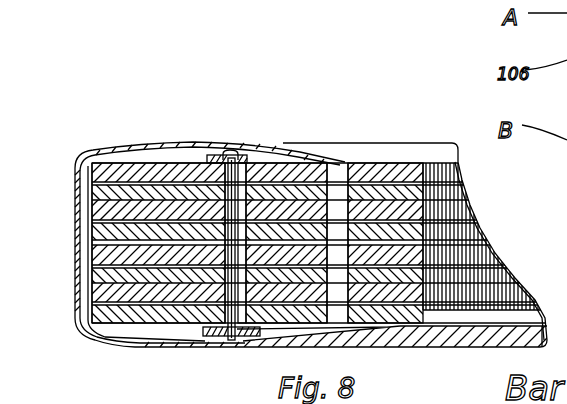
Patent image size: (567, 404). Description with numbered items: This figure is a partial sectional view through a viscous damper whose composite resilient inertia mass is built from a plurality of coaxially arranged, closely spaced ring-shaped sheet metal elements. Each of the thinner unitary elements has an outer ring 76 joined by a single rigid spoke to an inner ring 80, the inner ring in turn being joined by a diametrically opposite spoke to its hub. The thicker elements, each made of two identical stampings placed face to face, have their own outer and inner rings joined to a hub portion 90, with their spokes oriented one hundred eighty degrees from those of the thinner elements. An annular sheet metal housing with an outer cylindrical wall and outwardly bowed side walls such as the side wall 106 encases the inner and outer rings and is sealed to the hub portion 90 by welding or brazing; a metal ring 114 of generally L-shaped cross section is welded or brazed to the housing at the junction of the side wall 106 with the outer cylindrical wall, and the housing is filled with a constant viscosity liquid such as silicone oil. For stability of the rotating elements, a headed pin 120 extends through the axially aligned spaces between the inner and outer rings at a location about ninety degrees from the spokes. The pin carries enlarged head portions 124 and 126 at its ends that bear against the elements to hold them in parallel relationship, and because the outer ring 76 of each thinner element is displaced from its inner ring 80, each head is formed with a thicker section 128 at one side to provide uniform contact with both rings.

The outer ring 76 is at (130, 172).
The housing side wall 106 is at (170, 150).
The head portion 124 is at (207, 157).
The thicker section 128 is at (232, 152).
The headed pin 120 is at (245, 163).
The inner ring 80 is at (290, 168).
The hub portion 90 is at (393, 165).
The head portion 126 is at (210, 334).
The metal ring 114 is at (566, 220).